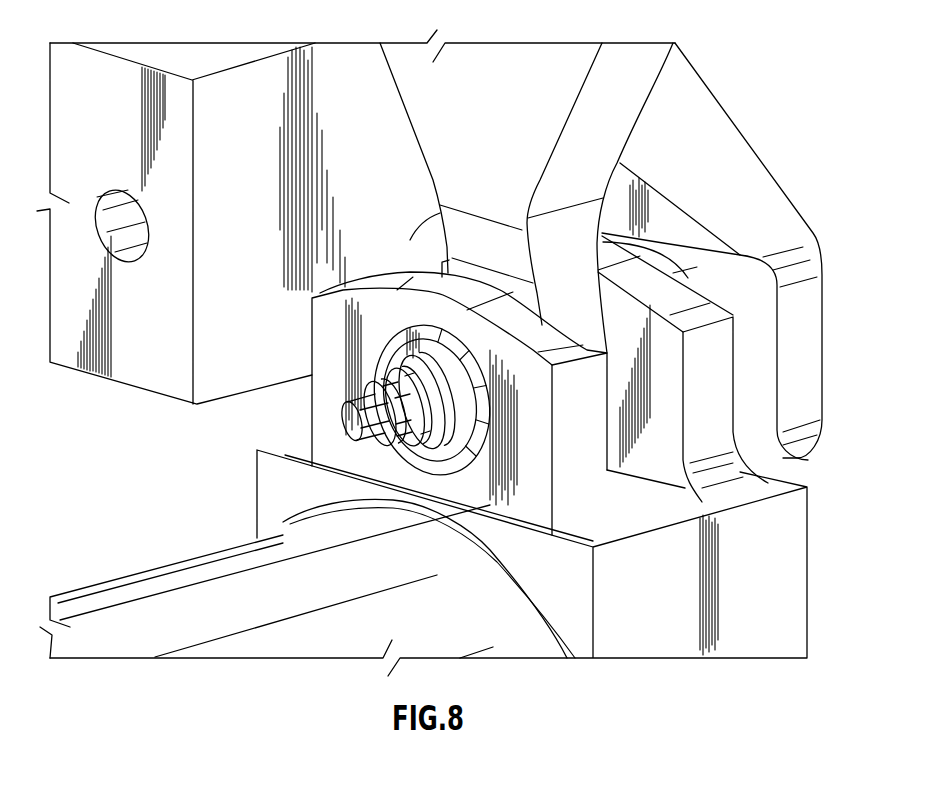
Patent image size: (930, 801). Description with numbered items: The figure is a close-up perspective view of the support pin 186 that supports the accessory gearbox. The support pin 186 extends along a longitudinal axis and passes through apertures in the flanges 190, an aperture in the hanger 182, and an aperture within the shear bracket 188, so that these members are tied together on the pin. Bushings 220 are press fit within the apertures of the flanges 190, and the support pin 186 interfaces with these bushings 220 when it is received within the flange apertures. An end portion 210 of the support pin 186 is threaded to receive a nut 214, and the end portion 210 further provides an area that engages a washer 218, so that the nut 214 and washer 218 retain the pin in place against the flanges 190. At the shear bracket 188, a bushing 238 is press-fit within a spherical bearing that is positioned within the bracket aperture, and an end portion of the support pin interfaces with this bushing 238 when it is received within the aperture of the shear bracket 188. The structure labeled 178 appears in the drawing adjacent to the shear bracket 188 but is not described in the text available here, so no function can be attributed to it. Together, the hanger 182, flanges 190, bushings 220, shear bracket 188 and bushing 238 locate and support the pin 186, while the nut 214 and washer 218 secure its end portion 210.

The support beam 178 is at (181, 574).
The hanger 182 is at (637, 95).
The support pin 186 is at (347, 435).
The shear bracket 188 is at (143, 373).
The flanges 190 is at (327, 380).
The end portion 210 is at (331, 426).
The nut 214 is at (437, 465).
The washer 218 is at (494, 547).
The bushings 220 is at (460, 450).
The bushing 238 is at (683, 263).